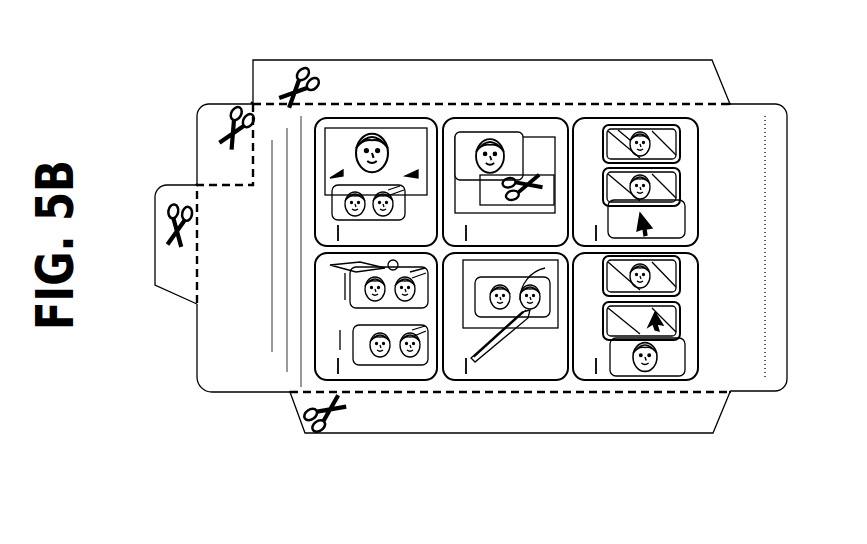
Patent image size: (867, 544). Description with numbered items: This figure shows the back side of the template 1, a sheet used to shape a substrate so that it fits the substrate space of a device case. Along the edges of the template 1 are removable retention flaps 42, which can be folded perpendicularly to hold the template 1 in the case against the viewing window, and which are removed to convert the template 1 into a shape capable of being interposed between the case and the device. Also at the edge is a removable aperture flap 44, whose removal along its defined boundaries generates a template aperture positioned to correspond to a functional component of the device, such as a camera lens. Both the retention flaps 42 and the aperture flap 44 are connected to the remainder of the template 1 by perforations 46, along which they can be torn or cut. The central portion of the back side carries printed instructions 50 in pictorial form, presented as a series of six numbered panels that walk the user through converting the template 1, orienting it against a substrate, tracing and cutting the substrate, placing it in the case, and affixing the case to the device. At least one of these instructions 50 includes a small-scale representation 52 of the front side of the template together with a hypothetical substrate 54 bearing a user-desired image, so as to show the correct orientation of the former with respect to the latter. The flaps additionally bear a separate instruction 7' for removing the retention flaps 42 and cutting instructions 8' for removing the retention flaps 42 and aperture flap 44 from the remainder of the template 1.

The template 1 is at (223, 375).
The instruction for removing the retention flaps 7' is at (517, 63).
The cutting instructions 8' is at (491, 62).
The retention flap 42 is at (175, 235).
The aperture flap 44 is at (222, 142).
The perforations 46 is at (252, 103).
The instructions 50 is at (518, 163).
The small-scale representation of the front side of the template 52 is at (357, 197).
The hypothetical substrate 54 is at (393, 157).